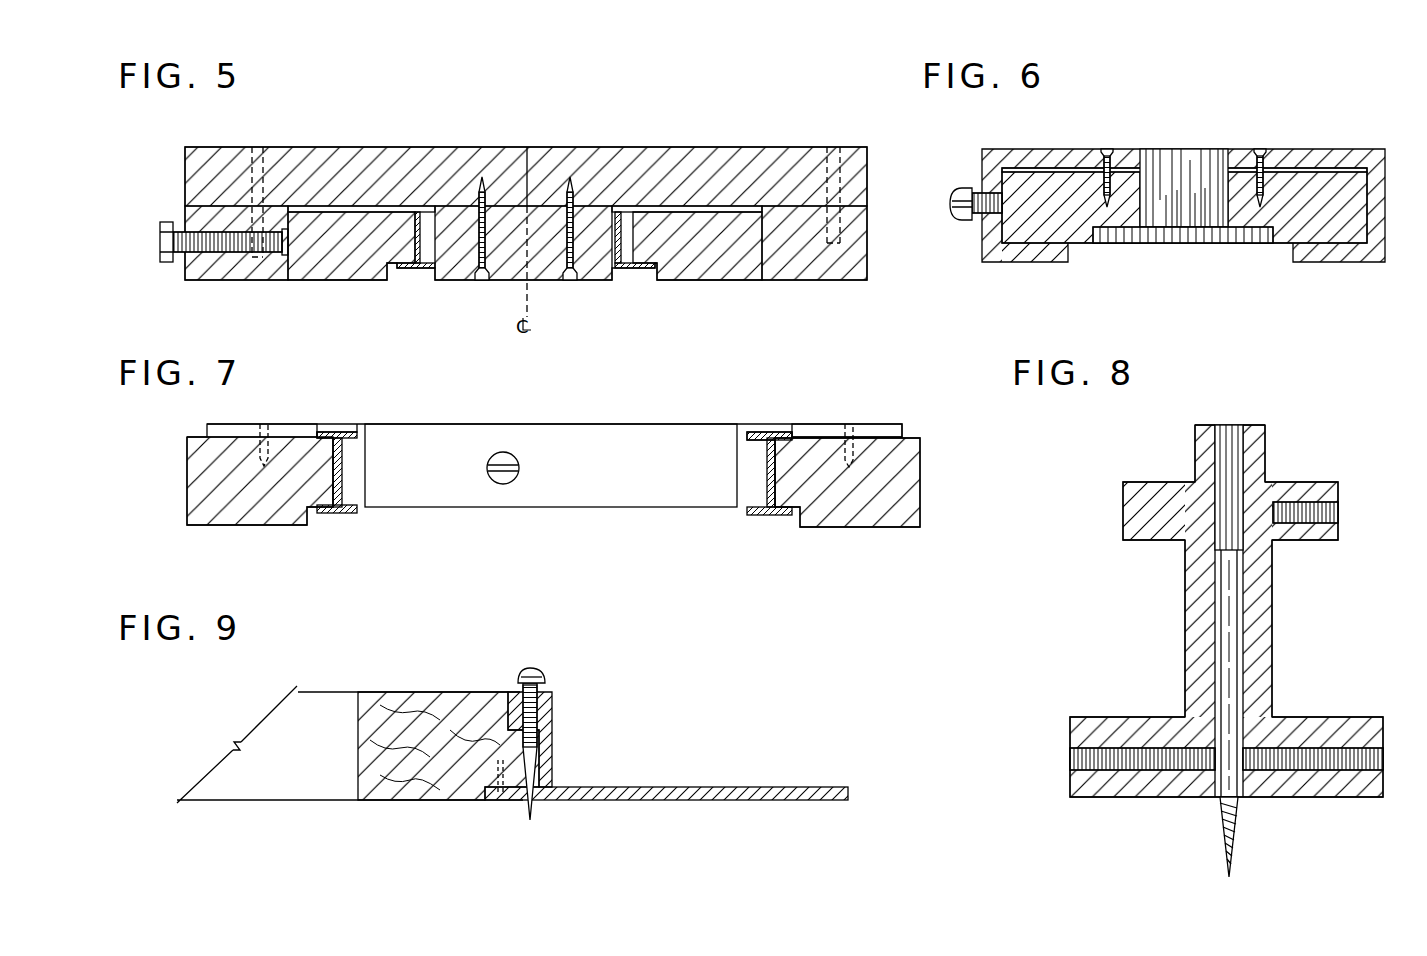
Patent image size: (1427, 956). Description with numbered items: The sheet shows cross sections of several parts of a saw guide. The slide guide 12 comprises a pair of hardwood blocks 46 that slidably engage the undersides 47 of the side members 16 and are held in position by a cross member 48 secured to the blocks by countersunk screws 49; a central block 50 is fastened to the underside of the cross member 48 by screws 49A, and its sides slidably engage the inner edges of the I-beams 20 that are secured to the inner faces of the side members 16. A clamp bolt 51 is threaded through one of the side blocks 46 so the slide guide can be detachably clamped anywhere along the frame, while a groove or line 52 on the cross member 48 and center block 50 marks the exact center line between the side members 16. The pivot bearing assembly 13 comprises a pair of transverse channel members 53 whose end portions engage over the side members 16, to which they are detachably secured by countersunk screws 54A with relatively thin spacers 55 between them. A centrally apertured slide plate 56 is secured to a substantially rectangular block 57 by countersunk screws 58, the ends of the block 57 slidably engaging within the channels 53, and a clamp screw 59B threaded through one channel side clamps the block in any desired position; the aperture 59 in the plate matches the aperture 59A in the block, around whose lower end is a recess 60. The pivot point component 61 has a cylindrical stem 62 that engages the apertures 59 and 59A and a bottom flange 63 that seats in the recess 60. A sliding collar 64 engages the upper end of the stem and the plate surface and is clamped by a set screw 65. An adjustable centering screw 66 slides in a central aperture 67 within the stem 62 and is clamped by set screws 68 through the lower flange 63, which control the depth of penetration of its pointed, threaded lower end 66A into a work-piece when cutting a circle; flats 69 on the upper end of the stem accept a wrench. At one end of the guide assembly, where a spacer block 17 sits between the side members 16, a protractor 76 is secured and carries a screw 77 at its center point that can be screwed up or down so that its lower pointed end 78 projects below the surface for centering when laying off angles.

In FIG. 5, the slide guide 12 is at (660, 138).
In FIG. 6, the retainer plate assembly 13 is at (1305, 272).
In FIG. 7, the retainer plate assembly 13 is at (658, 416).
In FIG. 5, the side member 16 is at (362, 268).
In FIG. 7, the side member 16 is at (245, 512).
In FIG. 9, the side member 16 is at (248, 785).
In FIG. 9, the spacer block 17 is at (378, 787).
In FIG. 5, the I-beam 20 is at (417, 266).
In FIG. 5, the hardwood block 46 is at (218, 272).
In FIG. 5, the underside of side member 47 is at (310, 265).
In FIG. 5, the cross member 48 is at (374, 163).
In FIG. 5, the countersunk screw 49 is at (256, 147).
In FIG. 5, the screw 49A is at (590, 270).
In FIG. 5, the central block 50 is at (495, 270).
In FIG. 5, the clamp bolt 51 is at (157, 241).
In FIG. 5, the groove or line 52 is at (528, 172).
In FIG. 6, the transverse channel member 53 is at (993, 150).
In FIG. 7, the transverse channel member 53 is at (535, 437).
In FIG. 7, the countersunk screw 54A is at (265, 428).
In FIG. 7, the spacer 55 is at (205, 430).
In FIG. 6, the slide plate 56 is at (1240, 150).
In FIG. 6, the block 57 is at (1040, 212).
In FIG. 6, the countersunk screw 58 is at (1105, 148).
In FIG. 6, the aperture 59 is at (1185, 160).
In FIG. 6, the aperture 59A is at (1188, 207).
In FIG. 6, the clamp screw 59B is at (952, 210).
In FIG. 7, the clamp screw 59B is at (520, 478).
In FIG. 6, the recess 60 is at (1238, 233).
In FIG. 8, the pivot point component 61 is at (1178, 608).
In FIG. 8, the cylindrical stem 62 is at (1188, 677).
In FIG. 8, the bottom flange 63 is at (1355, 790).
In FIG. 8, the sliding collar 64 is at (1320, 490).
In FIG. 8, the set screw 65 is at (1302, 517).
In FIG. 8, the adjustable centering screw 66 is at (1228, 663).
In FIG. 8, the lower end of centering screw 66A is at (1217, 810).
In FIG. 8, the central aperture 67 is at (1233, 425).
In FIG. 8, the set screw 68 is at (1285, 757).
In FIG. 8, the flats 69 is at (1195, 453).
In FIG. 9, the protractor 76 is at (777, 787).
In FIG. 9, the screw 77 is at (553, 770).
In FIG. 9, the lower pointed end 78 is at (537, 803).